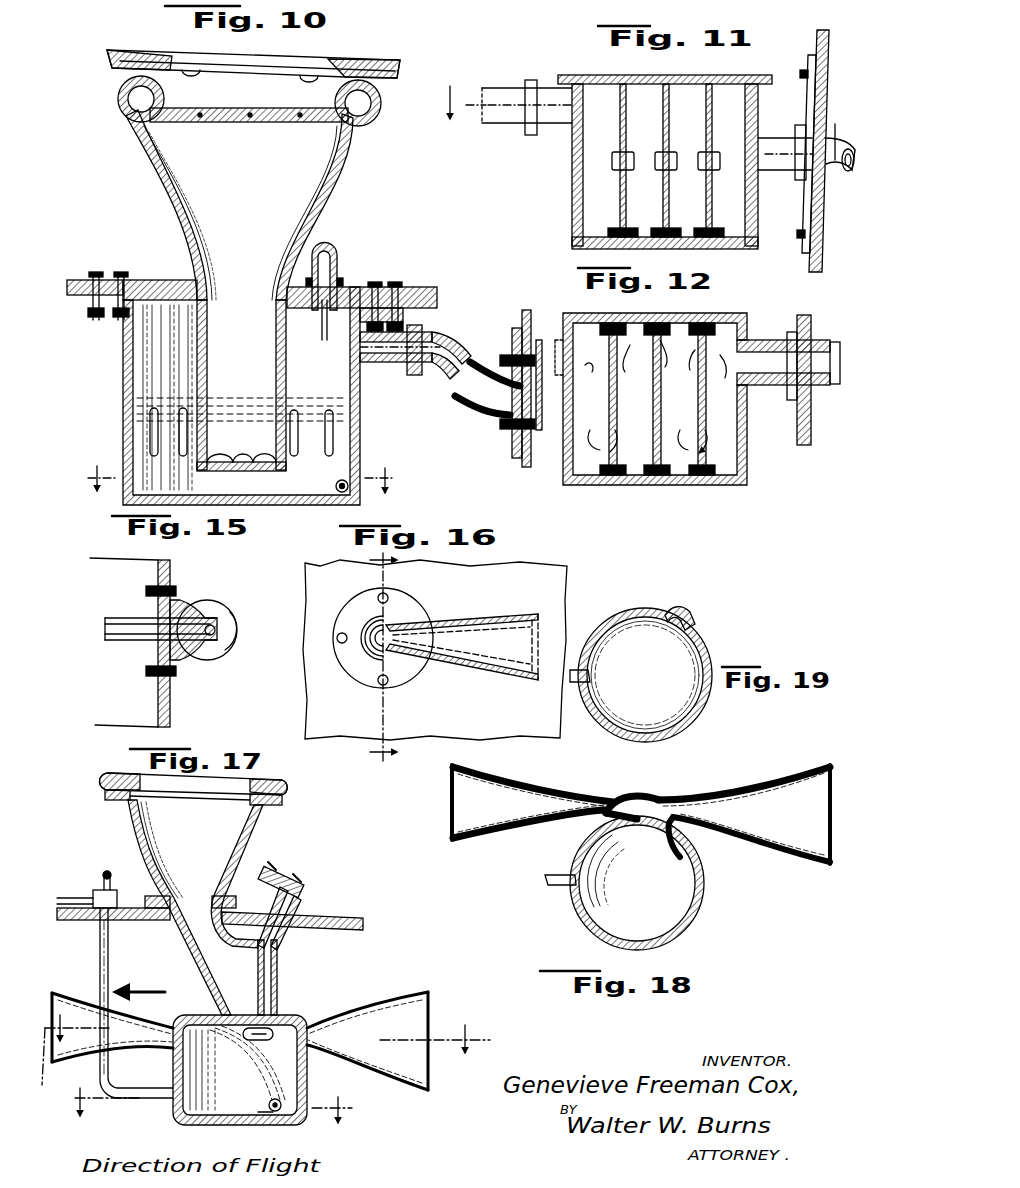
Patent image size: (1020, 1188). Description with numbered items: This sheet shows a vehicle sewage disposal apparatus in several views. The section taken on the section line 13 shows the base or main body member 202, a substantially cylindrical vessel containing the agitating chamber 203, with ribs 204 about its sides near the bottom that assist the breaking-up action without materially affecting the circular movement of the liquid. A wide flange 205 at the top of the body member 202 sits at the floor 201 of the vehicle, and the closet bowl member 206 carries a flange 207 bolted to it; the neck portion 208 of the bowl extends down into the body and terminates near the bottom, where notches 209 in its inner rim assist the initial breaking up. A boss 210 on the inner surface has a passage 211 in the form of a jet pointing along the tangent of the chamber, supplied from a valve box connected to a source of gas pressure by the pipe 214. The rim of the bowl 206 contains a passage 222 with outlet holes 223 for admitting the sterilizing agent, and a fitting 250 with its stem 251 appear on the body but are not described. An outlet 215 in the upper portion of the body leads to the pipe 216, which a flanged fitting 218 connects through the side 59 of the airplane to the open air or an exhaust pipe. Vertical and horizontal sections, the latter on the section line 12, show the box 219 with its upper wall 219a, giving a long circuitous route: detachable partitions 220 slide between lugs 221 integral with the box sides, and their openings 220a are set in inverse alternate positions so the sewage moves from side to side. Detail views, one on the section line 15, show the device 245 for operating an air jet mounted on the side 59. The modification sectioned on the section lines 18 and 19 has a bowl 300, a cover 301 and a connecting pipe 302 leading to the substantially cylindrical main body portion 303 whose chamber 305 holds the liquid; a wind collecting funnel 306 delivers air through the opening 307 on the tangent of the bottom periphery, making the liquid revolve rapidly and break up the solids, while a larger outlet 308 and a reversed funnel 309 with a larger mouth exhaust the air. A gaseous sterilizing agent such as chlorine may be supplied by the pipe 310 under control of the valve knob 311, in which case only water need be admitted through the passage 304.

In FIG. 11, the section line 12- 12 is at (629, 123).
In FIG. 10, the section line 13- 13 is at (240, 483).
In FIG. 16, the section line 15- 15 is at (382, 660).
In FIG. 17, the section line 18— 18 is at (271, 1063).
In FIG. 17, the section line 19— 19 is at (220, 1110).
In FIG. 10, the side of the airplane 59 is at (530, 318).
In FIG. 11, the side of the airplane 59 is at (814, 190).
In FIG. 12, the side of the airplane 59 is at (806, 440).
In FIG. 15, the side of the airplane 59 is at (172, 580).
In FIG. 16, the side of the airplane 59 is at (312, 690).
In FIG. 10, the floor of the vehicle 201 is at (76, 280).
In FIG. 10, the main body member 202 is at (123, 350).
In FIG. 10, the agitating chamber 203 is at (150, 378).
In FIG. 10, the ribs 204 is at (140, 415).
In FIG. 10, the wide flange 205 is at (97, 306).
In FIG. 10, the closet bowl member 206 is at (175, 185).
In FIG. 10, the flange 207 is at (160, 282).
In FIG. 10, the neck portion 208 is at (262, 400).
In FIG. 10, the notches 209 is at (260, 460).
In FIG. 10, the boss 210 is at (348, 480).
In FIG. 10, the passage 211 is at (352, 485).
In FIG. 15, the pipe 214 is at (140, 642).
In FIG. 10, the outlet 215 is at (392, 364).
In FIG. 11, the outlet 215 is at (508, 112).
In FIG. 10, the pipe 216 is at (452, 372).
In FIG. 10, the flanged fitting 218 is at (522, 345).
In FIG. 11, the flanged fitting 218 is at (808, 96).
In FIG. 12, the flanged fitting 218 is at (802, 405).
In FIG. 11, the box 219 is at (700, 76).
In FIG. 12, the box 219 is at (655, 487).
In FIG. 11, the cover 219a is at (600, 76).
In FIG. 11, the partitions 220 is at (608, 232).
In FIG. 12, the partitions 220 is at (656, 323).
In FIG. 11, the openings 220a is at (712, 120).
In FIG. 12, the openings 220a is at (712, 323).
In FIG. 11, the lugs 221 is at (615, 162).
In FIG. 10, the passage 222 is at (132, 103).
In FIG. 10, the outlet holes 223 is at (190, 124).
In FIG. 15, the nozzle 245 is at (218, 625).
In FIG. 16, the nozzle 245 is at (488, 662).
In FIG. 10, the valve 250 is at (340, 256).
In FIG. 10, the valve stem 251 is at (326, 304).
In FIG. 17, the funnel 300 is at (232, 830).
In FIG. 17, the cap 301 is at (290, 787).
In FIG. 17, the pipe 302 is at (248, 990).
In FIG. 19, the main body portion 303 is at (690, 665).
In FIG. 18, the main body portion 303 is at (704, 893).
In FIG. 17, the main body portion 303 is at (308, 1086).
In FIG. 17, the passage 304 is at (300, 913).
In FIG. 18, the chamber 305 is at (605, 878).
In FIG. 17, the chamber 305 is at (248, 1090).
In FIG. 18, the wind collecting funnel 306 is at (482, 812).
In FIG. 17, the wind collecting funnel 306 is at (70, 1005).
In FIG. 19, the opening 307 is at (693, 616).
In FIG. 17, the opening 307 is at (280, 1112).
In FIG. 18, the outlet 308 is at (672, 810).
In FIG. 17, the outlet 308 is at (272, 1012).
In FIG. 18, the funnel 309 is at (806, 840).
In FIG. 17, the funnel 309 is at (395, 1007).
In FIG. 19, the pipe 310 is at (593, 676).
In FIG. 18, the pipe 310 is at (548, 880).
In FIG. 17, the pipe 310 is at (110, 967).
In FIG. 17, the valve knob 311 is at (104, 876).